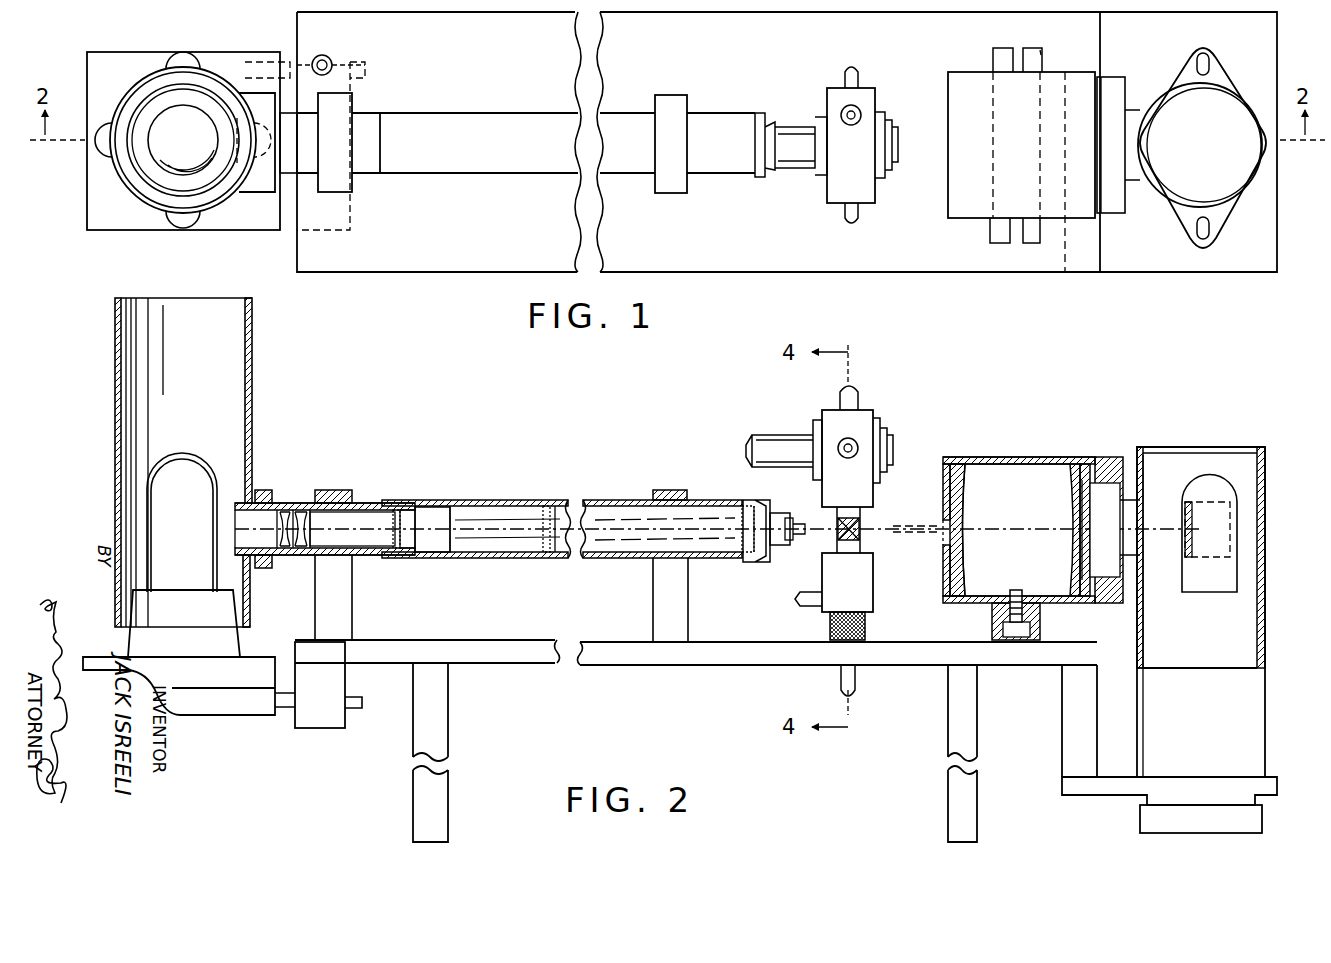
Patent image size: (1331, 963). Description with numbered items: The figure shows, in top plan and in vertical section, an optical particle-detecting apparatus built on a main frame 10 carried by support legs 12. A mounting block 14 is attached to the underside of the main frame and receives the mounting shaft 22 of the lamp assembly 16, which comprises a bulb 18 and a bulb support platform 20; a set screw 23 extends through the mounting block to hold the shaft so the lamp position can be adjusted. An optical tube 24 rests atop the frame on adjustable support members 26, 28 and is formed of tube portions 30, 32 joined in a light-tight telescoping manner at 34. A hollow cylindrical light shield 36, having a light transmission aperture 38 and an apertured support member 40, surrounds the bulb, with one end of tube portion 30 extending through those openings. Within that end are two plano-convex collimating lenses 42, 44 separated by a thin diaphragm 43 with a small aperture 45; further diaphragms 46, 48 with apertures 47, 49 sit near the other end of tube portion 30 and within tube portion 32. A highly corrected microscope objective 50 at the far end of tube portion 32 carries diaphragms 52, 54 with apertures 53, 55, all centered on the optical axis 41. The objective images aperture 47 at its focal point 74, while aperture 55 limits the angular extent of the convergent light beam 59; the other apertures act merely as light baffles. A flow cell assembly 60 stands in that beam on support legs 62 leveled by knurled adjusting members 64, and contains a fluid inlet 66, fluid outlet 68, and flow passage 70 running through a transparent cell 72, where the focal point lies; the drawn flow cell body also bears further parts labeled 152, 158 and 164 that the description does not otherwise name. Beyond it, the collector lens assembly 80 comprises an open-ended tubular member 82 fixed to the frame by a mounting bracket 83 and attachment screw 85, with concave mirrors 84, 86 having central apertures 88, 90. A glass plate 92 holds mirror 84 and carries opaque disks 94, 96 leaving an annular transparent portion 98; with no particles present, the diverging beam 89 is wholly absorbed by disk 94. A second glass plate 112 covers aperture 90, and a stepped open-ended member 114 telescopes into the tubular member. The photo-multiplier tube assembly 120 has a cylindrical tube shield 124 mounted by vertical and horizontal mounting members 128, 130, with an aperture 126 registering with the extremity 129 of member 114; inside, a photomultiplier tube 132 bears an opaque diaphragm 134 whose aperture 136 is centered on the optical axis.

In FIG. 1, the main frame 10 is at (462, 274).
In FIG. 2, the main frame 10 is at (485, 640).
In FIG. 2, the support legs 12 is at (449, 718).
In FIG. 2, the mounting block 14 is at (320, 728).
In FIG. 1, the lamp assembly 16 is at (124, 208).
In FIG. 2, the lamp assembly 16 is at (243, 641).
In FIG. 1, the bulb 18 is at (164, 170).
In FIG. 2, the bulb 18 is at (157, 472).
In FIG. 1, the bulb support platform 20 is at (214, 52).
In FIG. 2, the bulb support platform 20 is at (237, 708).
In FIG. 1, the mounting shaft 22 is at (291, 62).
In FIG. 2, the mounting shaft 22 is at (363, 700).
In FIG. 1, the set screw 23 is at (323, 55).
In FIG. 1, the optical tube 24 is at (410, 113).
In FIG. 2, the optical tube 24 is at (480, 500).
In FIG. 1, the adjustable support member 26 is at (344, 190).
In FIG. 2, the adjustable support member 26 is at (350, 490).
In FIG. 1, the adjustable support member 28 is at (665, 95).
In FIG. 2, the adjustable support member 28 is at (667, 491).
In FIG. 2, the tube portion 30 is at (380, 503).
In FIG. 2, the tube portion 32 is at (600, 500).
In FIG. 2, the telescoping interconnection 34 is at (412, 520).
In FIG. 1, the light shield 36 is at (157, 76).
In FIG. 2, the light shield 36 is at (252, 356).
In FIG. 2, the light transmission aperture 38 is at (262, 490).
In FIG. 2, the support member 40 is at (260, 568).
In FIG. 2, the optical axis 41 is at (640, 540).
In FIG. 2, the plano-convex collimating lens 42 is at (286, 510).
In FIG. 2, the diaphragm 43 is at (301, 548).
In FIG. 2, the plano-convex collimating lens 44 is at (320, 490).
In FIG. 2, the aperture 45 is at (330, 548).
In FIG. 2, the diaphragm 46 is at (400, 550).
In FIG. 2, the aperture 47 is at (420, 508).
In FIG. 2, the diaphragm 48 is at (550, 500).
In FIG. 2, the aperture 49 is at (545, 556).
In FIG. 2, the microscope objective 50 is at (760, 562).
In FIG. 2, the diaphragm 52 is at (738, 512).
In FIG. 2, the aperture 53 is at (738, 540).
In FIG. 2, the diaphragm 54 is at (780, 513).
In FIG. 2, the aperture 55 is at (786, 546).
In FIG. 2, the light beam 59 is at (816, 524).
In FIG. 1, the flow cell assembly 60 is at (872, 88).
In FIG. 2, the flow cell assembly 60 is at (878, 414).
In FIG. 2, the support legs 62 is at (856, 684).
In FIG. 2, the knurled adjusting members 64 is at (866, 626).
In FIG. 1, the fluid inlet 66 is at (858, 220).
In FIG. 2, the fluid inlet 66 is at (855, 443).
In FIG. 2, the fluid outlet 68 is at (800, 604).
In FIG. 2, the flow passage 70 is at (862, 528).
In FIG. 2, the transparent cell 72 is at (862, 538).
In FIG. 2, the focal point 74 is at (838, 530).
In FIG. 1, the collector lens assembly 80 is at (963, 222).
In FIG. 2, the collector lens assembly 80 is at (1050, 456).
In FIG. 1, the tubular member 82 is at (990, 72).
In FIG. 2, the tubular member 82 is at (1020, 457).
In FIG. 1, the mounting bracket 83 is at (1040, 50).
In FIG. 2, the mounting bracket 83 is at (1040, 620).
In FIG. 2, the concave mirror 84 is at (944, 592).
In FIG. 2, the attachment screw 85 is at (1010, 616).
In FIG. 2, the concave mirror 86 is at (1078, 462).
In FIG. 2, the aperture 88 is at (958, 500).
In FIG. 2, the beam 89 is at (916, 508).
In FIG. 2, the aperture 90 is at (1072, 505).
In FIG. 2, the glass plate 92 is at (952, 460).
In FIG. 2, the disk 94 is at (942, 533).
In FIG. 2, the disk 96 is at (946, 462).
In FIG. 2, the annular transparent portion 98 is at (958, 545).
In FIG. 2, the glass plate 112 is at (1086, 480).
In FIG. 1, the stepped open-ended member 114 is at (1108, 80).
In FIG. 2, the stepped open-ended member 114 is at (1122, 460).
In FIG. 1, the photo-multiplier tube assembly 120 is at (1252, 82).
In FIG. 2, the photo-multiplier tube assembly 120 is at (1266, 465).
In FIG. 1, the tube shield 124 is at (1256, 178).
In FIG. 2, the tube shield 124 is at (1196, 450).
In FIG. 2, the aperture 126 is at (1148, 505).
In FIG. 2, the vertical mounting member 128 is at (1066, 688).
In FIG. 2, the extremity 129 is at (1140, 560).
In FIG. 1, the horizontal mounting member 130 is at (1197, 268).
In FIG. 2, the horizontal mounting member 130 is at (1066, 786).
In FIG. 2, the photomultiplier tube 132 is at (1210, 476).
In FIG. 2, the opaque diaphragm 134 is at (1205, 545).
In FIG. 2, the aperture 136 is at (1192, 528).
In FIG. 1, the pin 152 is at (842, 75).
In FIG. 1, the cylinder 158 is at (808, 172).
In FIG. 2, the cylinder 158 is at (776, 435).
In FIG. 1, the pivot screw 164 is at (861, 114).
In FIG. 2, the pivot screw 164 is at (856, 388).